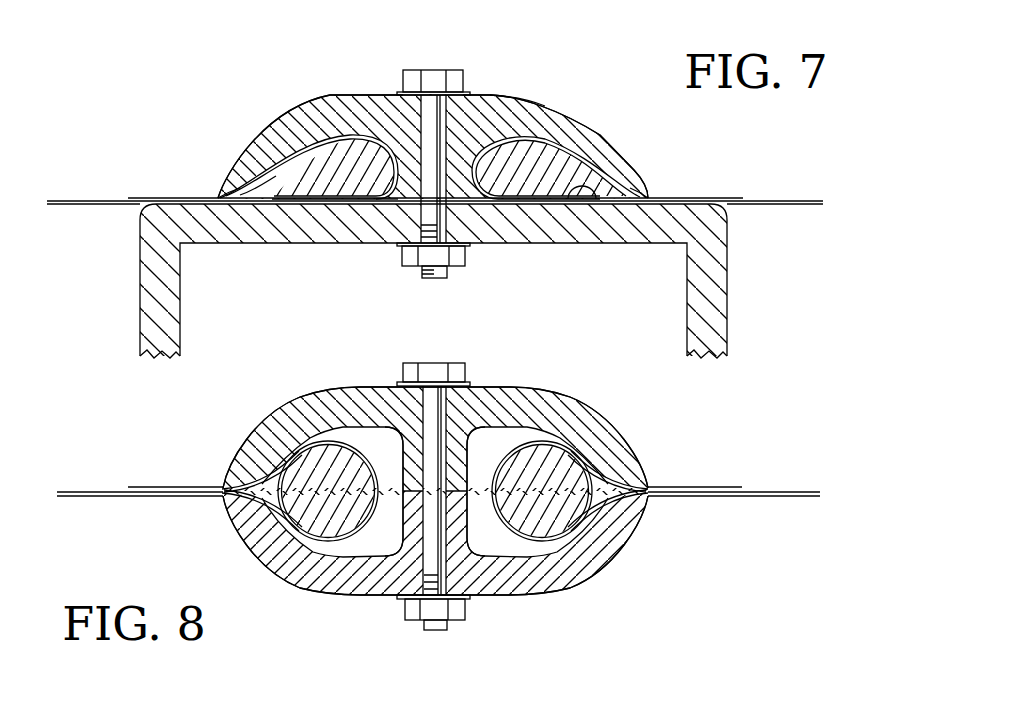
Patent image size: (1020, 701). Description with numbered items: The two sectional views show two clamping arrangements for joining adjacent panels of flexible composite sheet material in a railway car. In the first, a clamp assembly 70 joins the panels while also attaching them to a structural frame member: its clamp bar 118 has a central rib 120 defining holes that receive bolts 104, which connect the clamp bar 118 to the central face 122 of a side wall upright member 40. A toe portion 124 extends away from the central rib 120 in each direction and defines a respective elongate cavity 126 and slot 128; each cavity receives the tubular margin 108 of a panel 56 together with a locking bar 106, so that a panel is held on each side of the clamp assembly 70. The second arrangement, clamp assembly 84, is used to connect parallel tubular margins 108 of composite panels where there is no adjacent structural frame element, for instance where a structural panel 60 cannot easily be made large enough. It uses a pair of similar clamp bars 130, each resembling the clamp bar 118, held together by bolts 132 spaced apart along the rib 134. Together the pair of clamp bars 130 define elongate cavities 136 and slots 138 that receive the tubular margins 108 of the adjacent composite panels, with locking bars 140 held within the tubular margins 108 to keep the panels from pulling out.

In FIG. 7, the side wall upright member 40 is at (517, 225).
In FIG. 7, the panel 56 is at (100, 199).
In FIG. 8, the structural panel 60 is at (120, 497).
In FIG. 7, the clamp assembly 70 is at (557, 73).
In FIG. 8, the clamp assembly 84 is at (586, 402).
In FIG. 7, the bolt 104 is at (438, 70).
In FIG. 7, the locking bar 106 is at (333, 152).
In FIG. 7, the tubular margin 108 is at (275, 205).
In FIG. 8, the tubular margin 108 is at (265, 535).
In FIG. 7, the clamp bar 118 is at (375, 96).
In FIG. 7, the central rib 120 is at (397, 198).
In FIG. 7, the central face 122 is at (505, 98).
In FIG. 7, the toe portion 124 is at (255, 148).
In FIG. 7, the elongate cavity 126 is at (393, 133).
In FIG. 7, the slot 128 is at (218, 198).
In FIG. 8, the clamp bar 130 is at (360, 390).
In FIG. 8, the bolt 132 is at (437, 362).
In FIG. 8, the rib 134 is at (495, 427).
In FIG. 8, the elongate cavity 136 is at (385, 545).
In FIG. 8, the slot 138 is at (222, 496).
In FIG. 8, the locking bar 140 is at (305, 470).